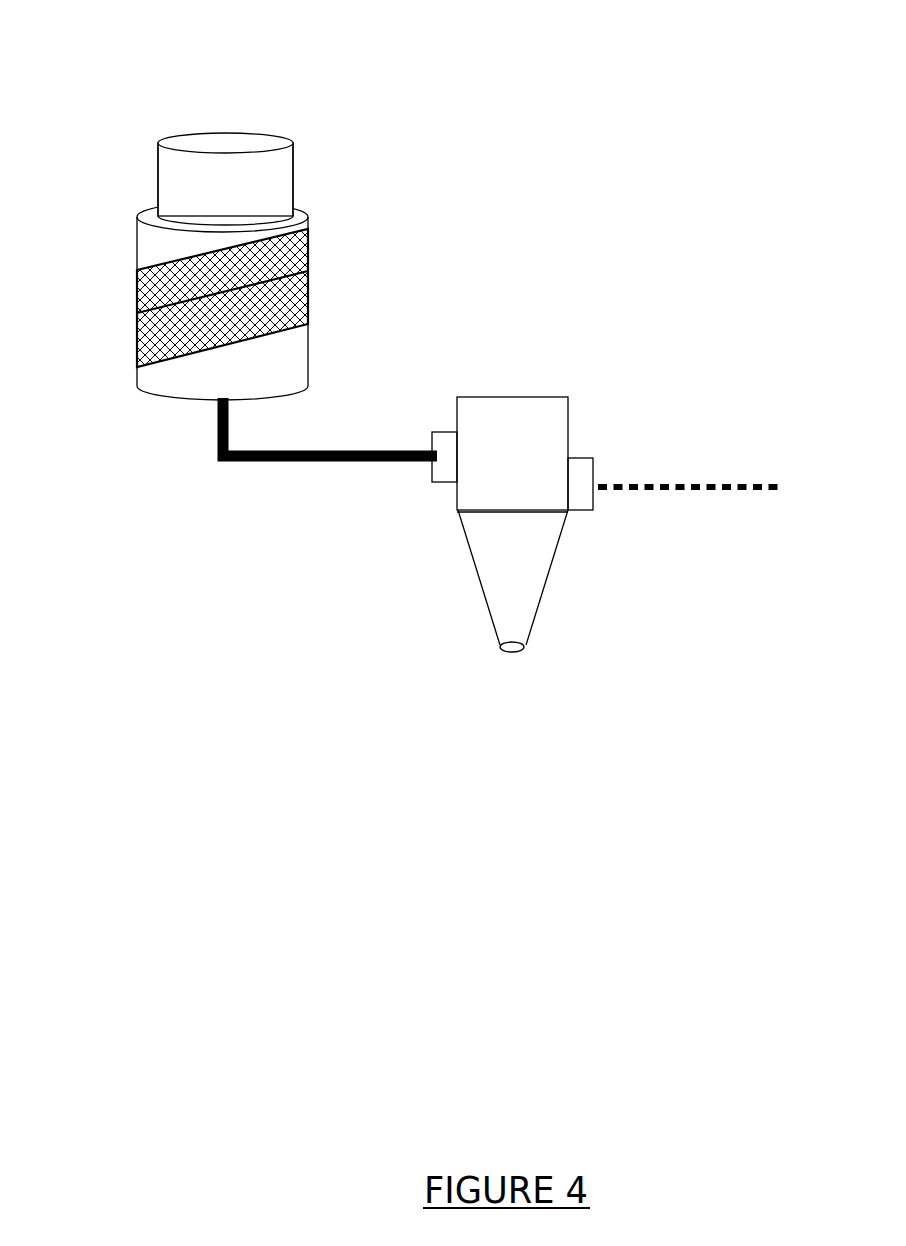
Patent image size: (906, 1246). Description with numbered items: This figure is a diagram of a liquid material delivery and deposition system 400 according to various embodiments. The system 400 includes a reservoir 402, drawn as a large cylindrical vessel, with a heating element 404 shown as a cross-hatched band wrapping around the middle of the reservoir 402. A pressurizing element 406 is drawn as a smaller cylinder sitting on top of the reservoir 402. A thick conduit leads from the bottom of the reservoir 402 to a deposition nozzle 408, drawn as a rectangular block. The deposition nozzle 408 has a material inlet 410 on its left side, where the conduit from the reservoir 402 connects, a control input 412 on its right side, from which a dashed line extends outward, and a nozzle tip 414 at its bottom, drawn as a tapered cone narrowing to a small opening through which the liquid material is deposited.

The liquid material delivery and deposition system 400 is at (498, 59).
The reservoir 402 is at (177, 375).
The heating element 404 is at (310, 257).
The pressurizing element 406 is at (258, 205).
The deposition nozzle 408 is at (513, 393).
The material inlet 410 is at (443, 468).
The control input 412 is at (590, 458).
The nozzle tip 414 is at (498, 562).